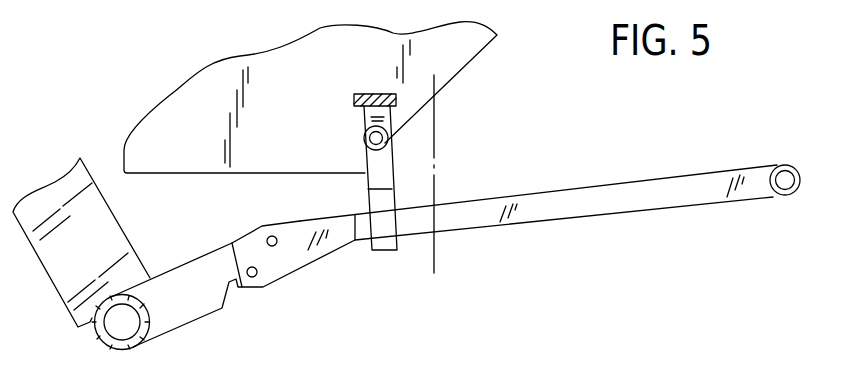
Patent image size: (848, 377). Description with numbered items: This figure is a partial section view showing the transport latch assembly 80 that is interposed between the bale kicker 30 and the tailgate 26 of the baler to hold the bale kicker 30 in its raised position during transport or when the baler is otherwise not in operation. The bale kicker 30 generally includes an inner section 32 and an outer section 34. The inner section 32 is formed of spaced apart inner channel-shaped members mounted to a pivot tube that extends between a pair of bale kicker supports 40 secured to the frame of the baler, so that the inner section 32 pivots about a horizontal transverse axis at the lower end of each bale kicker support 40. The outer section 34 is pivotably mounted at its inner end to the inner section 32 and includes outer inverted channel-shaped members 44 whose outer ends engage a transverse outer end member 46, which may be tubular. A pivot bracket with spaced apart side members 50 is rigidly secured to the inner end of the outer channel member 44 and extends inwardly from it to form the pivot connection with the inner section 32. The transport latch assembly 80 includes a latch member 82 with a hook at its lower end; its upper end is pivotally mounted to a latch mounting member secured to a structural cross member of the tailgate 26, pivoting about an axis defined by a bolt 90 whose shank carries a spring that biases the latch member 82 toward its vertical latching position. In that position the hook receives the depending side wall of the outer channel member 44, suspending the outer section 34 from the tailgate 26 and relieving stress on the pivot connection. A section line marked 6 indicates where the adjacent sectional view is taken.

The tailgate 26 is at (493, 55).
The section line 6- 6 is at (440, 83).
The transport latch assembly 80 is at (355, 184).
The latch member 82 is at (400, 194).
The bolt 90 is at (365, 146).
The bale kicker outer section 34 is at (552, 172).
The outer inverted channel-shaped member 44 is at (553, 185).
The transverse outer end member 46 is at (800, 193).
The side member 50 is at (277, 285).
The bale kicker 30 is at (237, 272).
The inner section 32 is at (183, 238).
The bale kicker support 40 is at (46, 272).